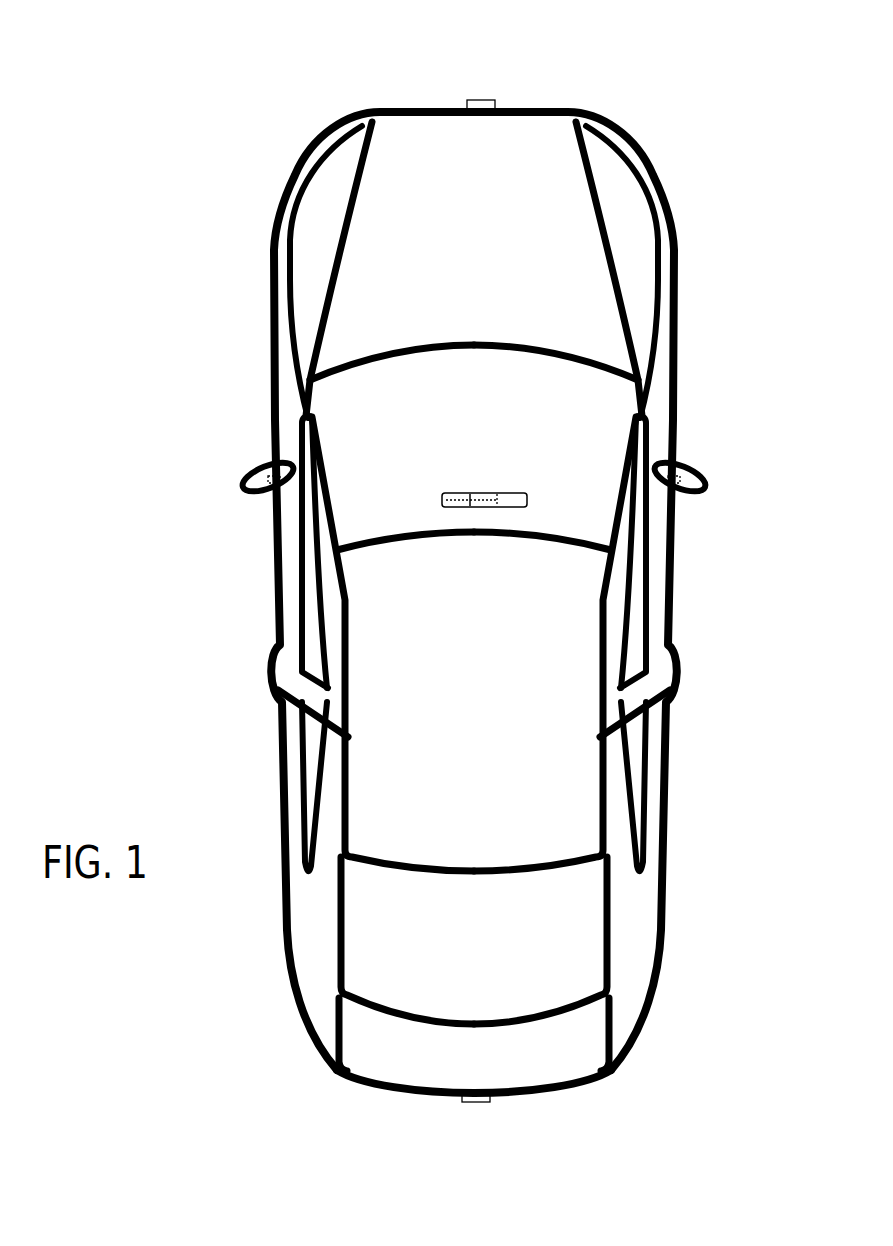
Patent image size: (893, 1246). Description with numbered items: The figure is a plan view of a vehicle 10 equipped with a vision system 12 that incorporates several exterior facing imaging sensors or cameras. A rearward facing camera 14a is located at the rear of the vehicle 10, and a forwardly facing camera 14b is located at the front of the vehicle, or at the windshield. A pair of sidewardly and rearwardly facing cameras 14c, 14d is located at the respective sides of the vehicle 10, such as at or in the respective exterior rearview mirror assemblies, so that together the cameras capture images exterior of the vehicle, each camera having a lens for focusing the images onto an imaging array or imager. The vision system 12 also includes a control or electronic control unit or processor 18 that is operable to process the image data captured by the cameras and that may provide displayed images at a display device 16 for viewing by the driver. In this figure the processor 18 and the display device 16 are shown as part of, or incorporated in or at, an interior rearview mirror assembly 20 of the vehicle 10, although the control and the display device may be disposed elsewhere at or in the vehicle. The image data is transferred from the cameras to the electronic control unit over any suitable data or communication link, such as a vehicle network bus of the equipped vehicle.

The vehicle 10 is at (225, 203).
The vision system 12 is at (423, 1125).
The rearward facing camera 14a is at (478, 1102).
The forwardly facing camera 14b is at (486, 100).
The sidewardly/rearwardly facing camera 14c is at (262, 472).
The sidewardly/rearwardly facing camera 14d is at (690, 470).
The display device 16 is at (459, 495).
The electronic control unit 18 is at (480, 493).
The interior rearview mirror assembly 20 is at (527, 495).